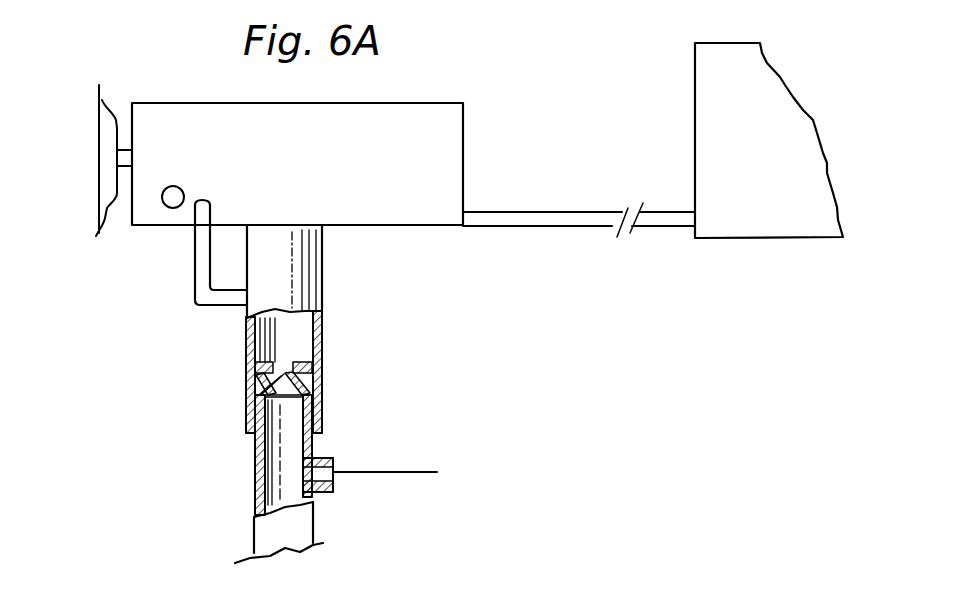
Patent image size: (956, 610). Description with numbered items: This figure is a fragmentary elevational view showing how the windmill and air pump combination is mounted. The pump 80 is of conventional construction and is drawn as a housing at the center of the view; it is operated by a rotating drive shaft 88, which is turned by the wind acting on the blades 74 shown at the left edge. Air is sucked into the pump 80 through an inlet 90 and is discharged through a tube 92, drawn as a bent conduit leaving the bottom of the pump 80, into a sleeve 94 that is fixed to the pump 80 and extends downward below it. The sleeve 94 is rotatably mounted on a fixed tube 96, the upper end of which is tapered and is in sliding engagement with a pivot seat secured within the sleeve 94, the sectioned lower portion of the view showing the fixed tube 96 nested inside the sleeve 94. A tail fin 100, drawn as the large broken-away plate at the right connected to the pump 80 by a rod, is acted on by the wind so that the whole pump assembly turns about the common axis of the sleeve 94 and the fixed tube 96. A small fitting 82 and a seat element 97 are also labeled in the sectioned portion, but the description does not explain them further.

The blades 74 is at (91, 122).
The pump 80 is at (385, 103).
The control rod 82 is at (408, 471).
The rotating drive shaft 88 is at (130, 146).
The inlet 90 is at (181, 188).
The tube 92 is at (193, 278).
The sleeve 94 is at (323, 290).
The fixed tube 96 is at (255, 488).
The valve seat 97 is at (300, 356).
The tail fin 100 is at (695, 125).